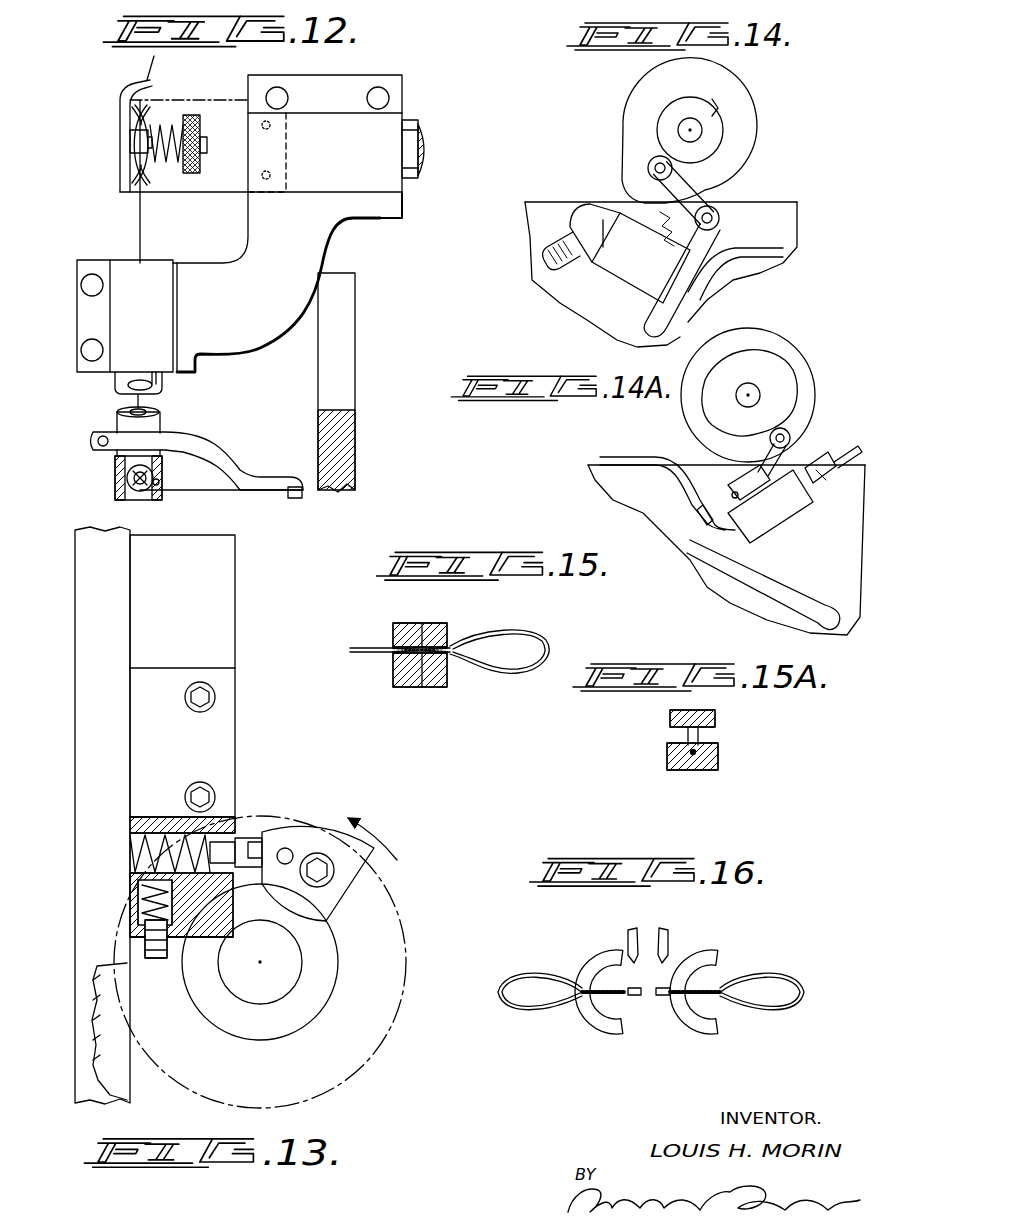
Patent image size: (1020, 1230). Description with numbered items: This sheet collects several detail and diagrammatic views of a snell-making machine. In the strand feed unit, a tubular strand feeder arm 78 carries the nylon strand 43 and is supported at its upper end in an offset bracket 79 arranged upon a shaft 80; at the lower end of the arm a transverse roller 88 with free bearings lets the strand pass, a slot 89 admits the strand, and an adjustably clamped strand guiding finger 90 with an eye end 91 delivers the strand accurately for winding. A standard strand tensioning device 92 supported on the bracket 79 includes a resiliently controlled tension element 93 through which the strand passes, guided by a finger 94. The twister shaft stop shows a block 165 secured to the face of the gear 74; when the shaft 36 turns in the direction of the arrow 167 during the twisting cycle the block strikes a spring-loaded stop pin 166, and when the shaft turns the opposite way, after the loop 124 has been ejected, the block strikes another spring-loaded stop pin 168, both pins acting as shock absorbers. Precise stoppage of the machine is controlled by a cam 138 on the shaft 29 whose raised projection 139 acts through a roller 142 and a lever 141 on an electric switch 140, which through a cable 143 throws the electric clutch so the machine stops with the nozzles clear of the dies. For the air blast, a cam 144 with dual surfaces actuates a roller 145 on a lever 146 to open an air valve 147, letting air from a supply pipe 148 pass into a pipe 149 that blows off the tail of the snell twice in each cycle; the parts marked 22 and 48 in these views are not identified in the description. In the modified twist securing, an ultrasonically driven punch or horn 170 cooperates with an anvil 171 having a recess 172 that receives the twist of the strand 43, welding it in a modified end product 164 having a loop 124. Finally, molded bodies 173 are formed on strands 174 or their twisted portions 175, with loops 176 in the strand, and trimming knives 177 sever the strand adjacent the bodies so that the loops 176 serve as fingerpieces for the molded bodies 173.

In FIG. 12, the frame plate 22 is at (353, 440).
In FIG. 14, the frame plate 22 is at (797, 201).
In FIG. 14, the shaft 29 is at (694, 128).
In FIG. 14A, the shaft 29 is at (752, 394).
In FIG. 13, the shaft 36 is at (253, 990).
In FIG. 12, the strand 43 is at (140, 215).
In FIG. 15, the strand 43 is at (422, 625).
In FIG. 14, the cam 48 is at (633, 97).
In FIG. 14A, the cam 48 is at (770, 318).
In FIG. 13, the gear 74 is at (405, 936).
In FIG. 12, the strand feeder arm 78 is at (118, 418).
In FIG. 12, the offset bracket 79 is at (238, 328).
In FIG. 12, the shaft 80 is at (428, 124).
In FIG. 12, the transverse roller 88 is at (115, 478).
In FIG. 12, the slot 89 is at (160, 483).
In FIG. 12, the strand guiding finger 90 is at (247, 477).
In FIG. 12, the eye end 91 is at (302, 500).
In FIG. 12, the strand tensioning device 92 is at (113, 98).
In FIG. 12, the tension element 93 is at (130, 112).
In FIG. 12, the finger 94 is at (150, 85).
In FIG. 15, the loop 124 is at (551, 645).
In FIG. 14, the cam 138 is at (718, 134).
In FIG. 14, the raised projection 139 is at (717, 92).
In FIG. 14, the electric switch 140 is at (630, 253).
In FIG. 14, the lever 141 is at (748, 174).
In FIG. 14, the roller 142 is at (653, 150).
In FIG. 14, the cable 143 is at (543, 252).
In FIG. 14A, the cam 144 is at (760, 370).
In FIG. 14A, the roller 145 is at (793, 430).
In FIG. 14A, the lever 146 is at (741, 483).
In FIG. 14A, the air valve 147 is at (780, 510).
In FIG. 14A, the pipe 148 is at (850, 468).
In FIG. 14A, the pipe 149 is at (640, 432).
In FIG. 15, the end product 164 is at (365, 648).
In FIG. 13, the block 165 is at (300, 837).
In FIG. 13, the spring-loaded stop pin 166 is at (250, 835).
In FIG. 13, the arrow 167 is at (386, 822).
In FIG. 13, the spring-loaded stop pin 168 is at (145, 952).
In FIG. 15, the punch or horn 170 is at (447, 631).
In FIG. 15A, the punch or horn 170 is at (712, 735).
In FIG. 15, the anvil 171 is at (426, 675).
In FIG. 15A, the anvil 171 is at (719, 757).
In FIG. 15A, the recess 172 is at (701, 766).
In FIG. 16, the molded bodies 173 is at (590, 950).
In FIG. 16, the strands 174 is at (660, 997).
In FIG. 16, the twisted portions 175 is at (588, 1005).
In FIG. 16, the loops 176 is at (532, 972).
In FIG. 16, the trimming knives 177 is at (663, 928).